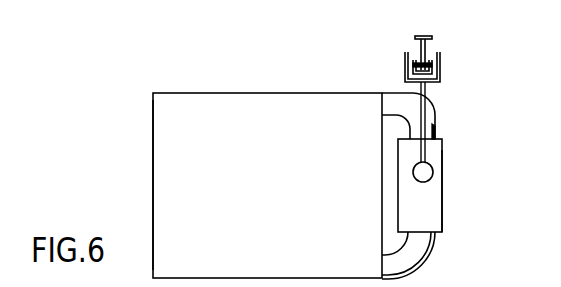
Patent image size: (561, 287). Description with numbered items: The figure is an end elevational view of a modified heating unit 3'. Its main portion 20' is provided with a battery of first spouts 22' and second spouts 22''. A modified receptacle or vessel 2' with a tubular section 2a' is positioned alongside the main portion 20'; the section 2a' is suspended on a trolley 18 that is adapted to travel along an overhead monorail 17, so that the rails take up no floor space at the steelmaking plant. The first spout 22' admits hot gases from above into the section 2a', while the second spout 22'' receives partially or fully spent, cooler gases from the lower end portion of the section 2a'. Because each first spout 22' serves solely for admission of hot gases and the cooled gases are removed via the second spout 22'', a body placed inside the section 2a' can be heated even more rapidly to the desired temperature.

The modified heating unit 3' is at (240, 185).
The main portion of the heating unit 20' is at (140, 185).
The first spout 22' is at (436, 116).
The modified receptacle or vessel 2' is at (442, 185).
The tubular section 2a' is at (468, 191).
The second spout 22'' is at (432, 255).
The trolley 18 is at (441, 78).
The overhead monorail 17 is at (432, 38).